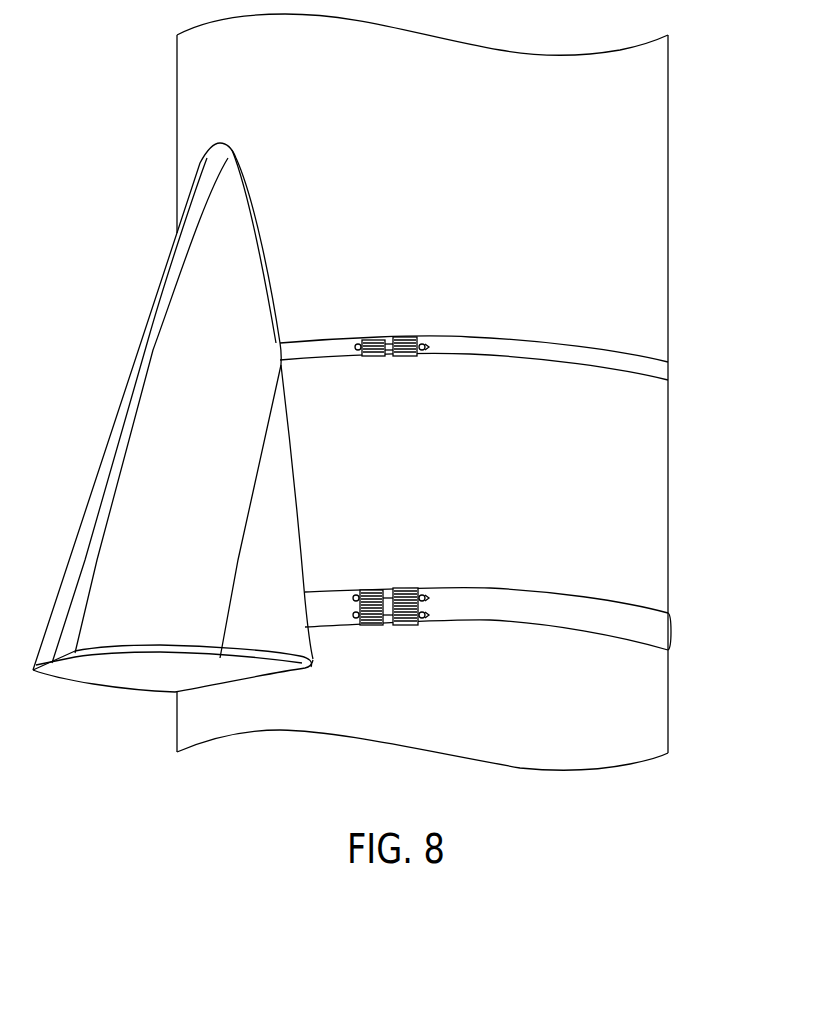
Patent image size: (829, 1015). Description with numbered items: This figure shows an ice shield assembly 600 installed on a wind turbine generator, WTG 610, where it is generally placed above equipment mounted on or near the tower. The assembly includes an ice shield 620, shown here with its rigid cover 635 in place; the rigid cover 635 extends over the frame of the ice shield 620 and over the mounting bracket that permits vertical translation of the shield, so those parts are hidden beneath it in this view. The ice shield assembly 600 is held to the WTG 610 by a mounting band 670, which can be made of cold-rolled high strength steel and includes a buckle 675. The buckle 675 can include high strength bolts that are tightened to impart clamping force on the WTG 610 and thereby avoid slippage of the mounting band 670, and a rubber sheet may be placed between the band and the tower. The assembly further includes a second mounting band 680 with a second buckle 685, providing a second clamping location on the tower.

The ice shield assembly 600 is at (404, 392).
The WTG 610 is at (612, 197).
The ice shield 620 is at (173, 417).
The rigid cover 635 is at (245, 247).
The mounting band 670 is at (488, 593).
The buckle 675 is at (408, 595).
The second mounting band 680 is at (474, 331).
The second buckle 685 is at (408, 340).